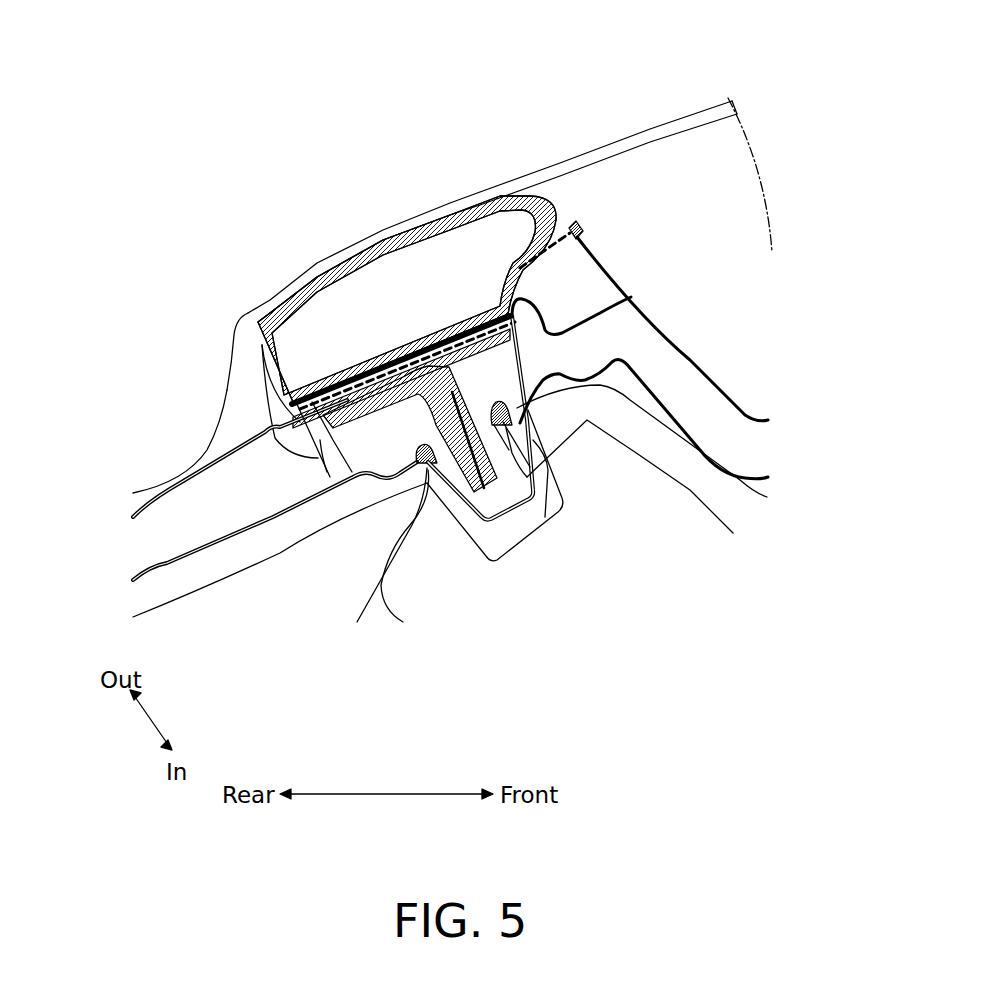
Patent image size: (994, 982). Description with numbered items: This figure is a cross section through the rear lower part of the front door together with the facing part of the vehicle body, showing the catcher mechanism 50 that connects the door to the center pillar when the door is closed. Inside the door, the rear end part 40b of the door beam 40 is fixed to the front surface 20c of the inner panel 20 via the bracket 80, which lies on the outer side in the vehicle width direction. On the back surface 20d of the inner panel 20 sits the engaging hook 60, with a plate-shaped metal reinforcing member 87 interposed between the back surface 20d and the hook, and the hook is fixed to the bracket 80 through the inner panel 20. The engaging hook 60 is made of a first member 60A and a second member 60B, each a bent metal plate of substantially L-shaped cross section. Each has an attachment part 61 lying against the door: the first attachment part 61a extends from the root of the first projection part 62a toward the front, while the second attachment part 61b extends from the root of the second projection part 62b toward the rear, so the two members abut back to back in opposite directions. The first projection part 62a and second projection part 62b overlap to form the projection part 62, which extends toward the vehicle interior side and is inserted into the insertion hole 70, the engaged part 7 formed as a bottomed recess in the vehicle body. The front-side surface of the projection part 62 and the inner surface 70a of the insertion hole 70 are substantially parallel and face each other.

The inner panel 20 is at (180, 483).
The front surface of the inner panel 20c is at (133, 486).
The back surface of the inner panel 20d is at (197, 517).
The door beam 40 is at (592, 146).
The rear end part of the door beam 40b is at (380, 241).
The catcher mechanism 50 is at (534, 318).
The engaging hook 60 is at (407, 264).
The first member 60A is at (467, 313).
The second member 60B is at (365, 380).
The attachment part 61 is at (387, 261).
The first attachment part 61a is at (476, 305).
The second attachment part 61b is at (262, 345).
The projection part 62 is at (547, 482).
The first projection part 62a is at (484, 406).
The second projection part 62b is at (438, 428).
The engaged part 7 is at (652, 318).
The insertion hole 70 is at (520, 360).
The inner surface of the insertion hole 70a is at (492, 440).
The bracket 80 is at (590, 232).
The reinforcing member 87 is at (282, 428).